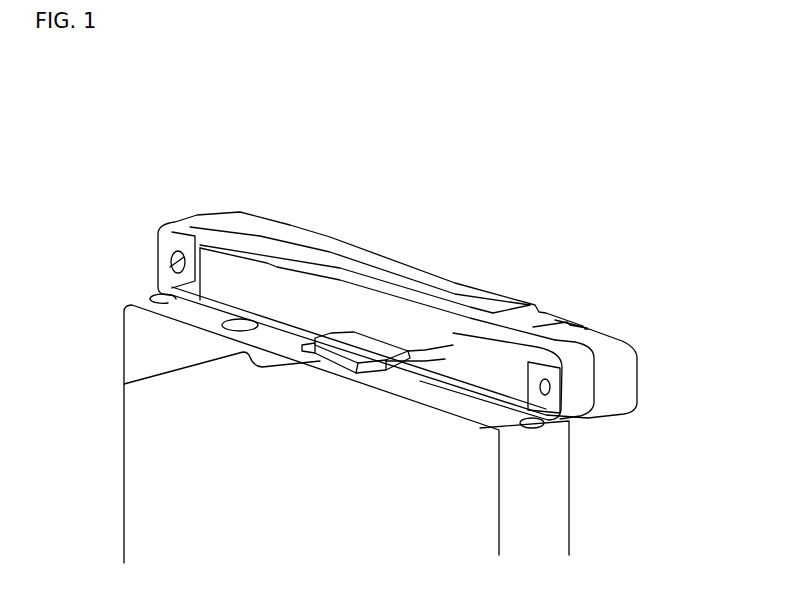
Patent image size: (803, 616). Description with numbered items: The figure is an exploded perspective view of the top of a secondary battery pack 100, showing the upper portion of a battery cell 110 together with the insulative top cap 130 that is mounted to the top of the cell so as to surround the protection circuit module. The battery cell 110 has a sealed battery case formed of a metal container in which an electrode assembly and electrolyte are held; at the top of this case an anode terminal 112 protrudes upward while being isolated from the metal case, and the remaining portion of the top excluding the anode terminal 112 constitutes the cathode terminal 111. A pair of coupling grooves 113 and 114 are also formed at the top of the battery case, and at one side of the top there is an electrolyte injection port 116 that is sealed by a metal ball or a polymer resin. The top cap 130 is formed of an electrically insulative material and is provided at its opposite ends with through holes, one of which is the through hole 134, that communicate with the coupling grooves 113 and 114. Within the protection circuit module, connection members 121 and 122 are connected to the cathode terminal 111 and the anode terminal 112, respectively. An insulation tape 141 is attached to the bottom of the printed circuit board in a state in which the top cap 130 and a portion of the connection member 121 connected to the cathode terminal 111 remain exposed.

The secondary battery pack 100 is at (105, 147).
The battery cell 110 is at (584, 505).
The cathode terminal 111 is at (447, 403).
The anode terminal 112 is at (124, 384).
The coupling groove 113 is at (545, 430).
The coupling groove 114 is at (155, 294).
The electrolyte injection port 116 is at (236, 320).
The connection member 121 is at (560, 394).
The connection member 122 is at (365, 352).
The top cap 130 is at (645, 385).
The through hole 134 is at (170, 262).
The insulation tape 141 is at (300, 303).